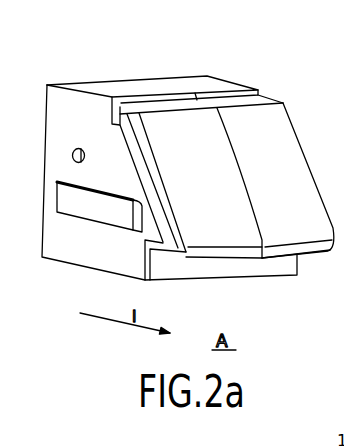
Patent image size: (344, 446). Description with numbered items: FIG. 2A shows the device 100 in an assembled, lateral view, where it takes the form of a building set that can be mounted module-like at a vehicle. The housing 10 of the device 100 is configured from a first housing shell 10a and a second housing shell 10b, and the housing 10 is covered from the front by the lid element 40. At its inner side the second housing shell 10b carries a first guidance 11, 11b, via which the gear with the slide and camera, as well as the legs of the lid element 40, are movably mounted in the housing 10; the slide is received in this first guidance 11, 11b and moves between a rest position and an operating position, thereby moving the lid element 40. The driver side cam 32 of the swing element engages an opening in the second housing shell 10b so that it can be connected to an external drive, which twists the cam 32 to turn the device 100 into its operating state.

The device 100 is at (177, 189).
The housing 10 is at (175, 189).
The first housing shell 10a is at (189, 82).
The second housing shell 10b is at (67, 117).
The first guidance 11 is at (91, 270).
The first guidance 11b is at (137, 216).
The driver side cam 32 is at (85, 157).
The lid element 40 is at (279, 157).